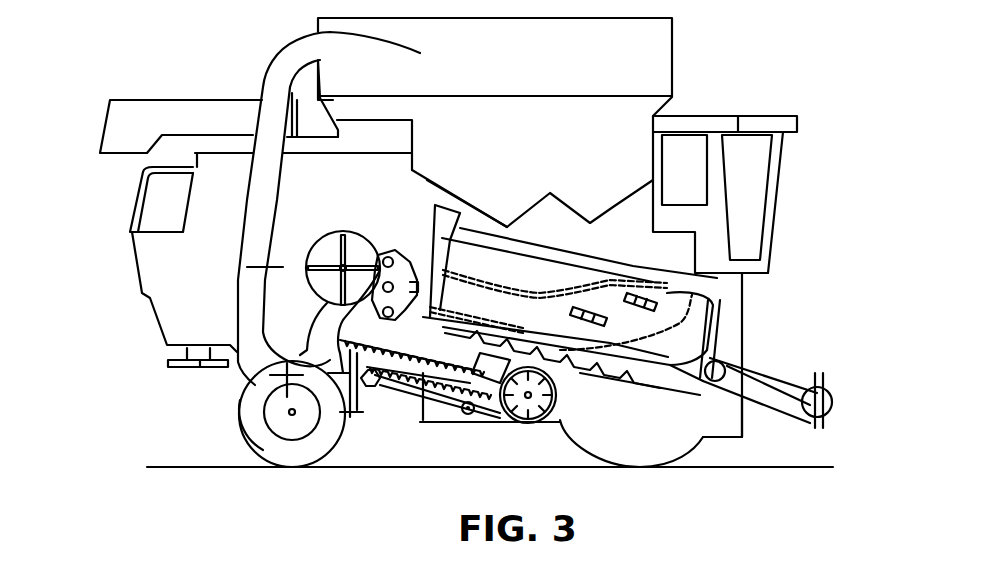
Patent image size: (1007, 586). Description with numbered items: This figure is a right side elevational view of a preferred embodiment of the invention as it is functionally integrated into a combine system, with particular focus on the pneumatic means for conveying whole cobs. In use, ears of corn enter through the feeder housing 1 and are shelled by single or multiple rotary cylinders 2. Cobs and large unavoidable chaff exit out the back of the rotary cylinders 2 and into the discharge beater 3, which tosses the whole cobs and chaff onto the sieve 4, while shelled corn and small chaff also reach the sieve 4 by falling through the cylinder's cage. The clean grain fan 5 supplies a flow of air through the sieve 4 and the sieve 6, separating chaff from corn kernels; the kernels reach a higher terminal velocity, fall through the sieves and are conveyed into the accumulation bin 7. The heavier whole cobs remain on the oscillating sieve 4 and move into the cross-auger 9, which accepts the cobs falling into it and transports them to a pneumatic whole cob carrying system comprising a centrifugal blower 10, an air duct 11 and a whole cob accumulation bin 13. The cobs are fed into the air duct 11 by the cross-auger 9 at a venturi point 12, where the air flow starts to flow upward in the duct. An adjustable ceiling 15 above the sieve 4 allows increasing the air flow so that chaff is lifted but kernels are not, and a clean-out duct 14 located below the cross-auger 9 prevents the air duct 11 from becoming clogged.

The feeder housing 1 is at (763, 383).
The rotary cylinders 2 is at (625, 325).
The discharge beater 3 is at (395, 280).
The sieve 4 is at (337, 463).
The clean grain fan 5 is at (527, 410).
The sieve 6 is at (427, 417).
The accumulation bin 7 is at (528, 134).
The cross-auger 9 is at (270, 352).
The centrifugal blower 10 is at (340, 265).
The air duct 11 is at (272, 110).
The venturi point 12 is at (272, 432).
The whole cob accumulation bin 13 is at (320, 28).
The clean-out duct 14 is at (277, 372).
The ceiling 15 is at (307, 268).